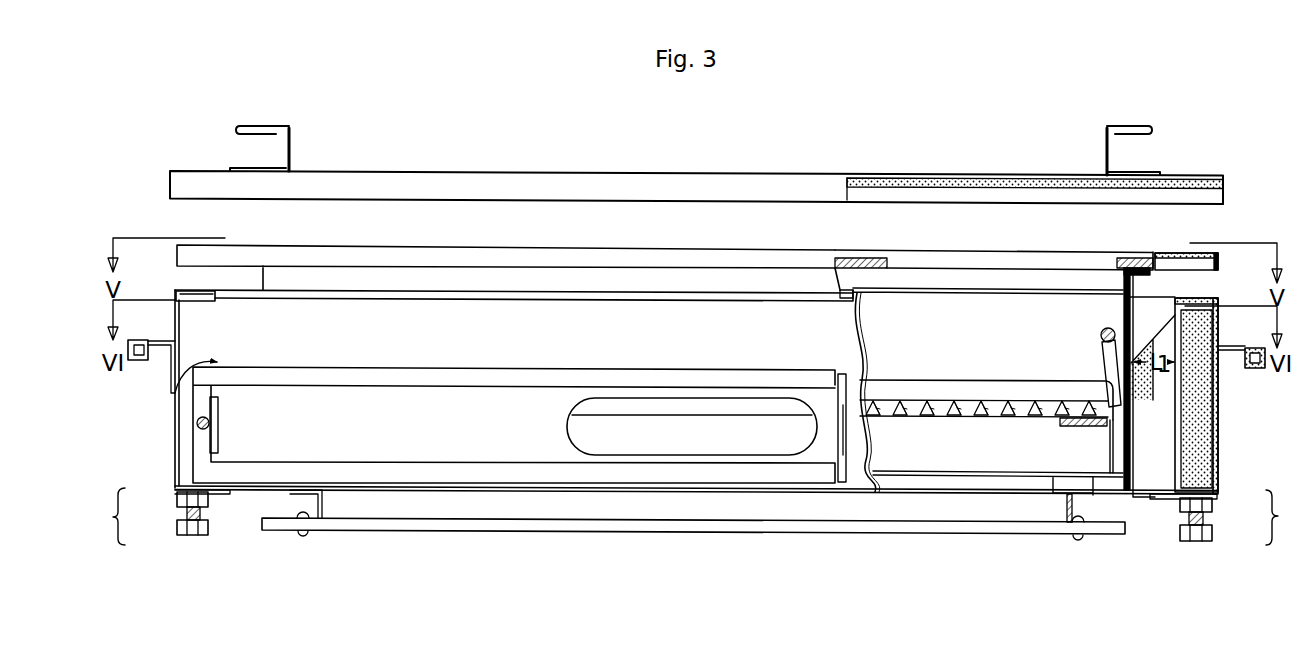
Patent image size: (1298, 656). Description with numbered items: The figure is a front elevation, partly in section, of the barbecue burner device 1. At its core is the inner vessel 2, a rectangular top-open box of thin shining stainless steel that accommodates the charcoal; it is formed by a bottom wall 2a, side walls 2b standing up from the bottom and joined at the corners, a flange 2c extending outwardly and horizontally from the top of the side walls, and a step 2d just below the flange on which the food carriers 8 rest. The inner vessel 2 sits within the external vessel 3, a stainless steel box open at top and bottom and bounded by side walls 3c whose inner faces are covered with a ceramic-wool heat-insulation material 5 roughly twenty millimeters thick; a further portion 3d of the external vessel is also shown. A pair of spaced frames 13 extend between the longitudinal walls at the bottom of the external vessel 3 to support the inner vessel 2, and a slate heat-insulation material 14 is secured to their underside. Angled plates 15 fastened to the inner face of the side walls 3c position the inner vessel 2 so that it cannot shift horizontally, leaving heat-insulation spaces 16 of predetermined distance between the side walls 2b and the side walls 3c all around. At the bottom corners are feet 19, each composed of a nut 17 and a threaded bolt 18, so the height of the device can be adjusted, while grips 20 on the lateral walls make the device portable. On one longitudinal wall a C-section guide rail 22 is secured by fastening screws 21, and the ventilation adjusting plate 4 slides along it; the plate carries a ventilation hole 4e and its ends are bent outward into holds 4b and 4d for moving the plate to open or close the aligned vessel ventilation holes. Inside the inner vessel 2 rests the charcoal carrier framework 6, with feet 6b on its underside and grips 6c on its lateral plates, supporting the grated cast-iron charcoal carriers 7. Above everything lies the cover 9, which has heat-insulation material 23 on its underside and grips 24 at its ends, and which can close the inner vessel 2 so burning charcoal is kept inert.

The barbecue burner device 1 is at (548, 162).
The inner vessel 2 is at (737, 248).
The bottom wall 2a is at (1018, 471).
The side walls 2b is at (1124, 318).
The flange 2c is at (1165, 253).
The step 2d is at (1133, 258).
The external vessel 3 is at (175, 322).
The side walls 3c is at (1218, 460).
The top flange of frame 3d is at (178, 290).
The ventilation adjusting plate 4 is at (833, 374).
The hold 4b is at (843, 376).
The hold 4d is at (210, 447).
The ventilation hole 4e is at (570, 428).
The heat-insulation material 5 is at (1205, 440).
The charcoal carrier framework 6 is at (1030, 380).
The feet 6b is at (1110, 450).
The grips 6c is at (1102, 334).
The charcoal carriers 7 is at (955, 400).
The food carriers 8 is at (975, 252).
The cover 9 is at (955, 177).
The frames 13 is at (1093, 483).
The heat-insulation material 14 is at (353, 531).
The angled plates 15 is at (1160, 330).
The heat-insulation spaces 16 is at (1153, 307).
The nut 17 is at (177, 498).
The bolt 18 is at (177, 528).
The feet 19 is at (693, 516).
The grips 20 is at (1263, 394).
The fastening screws 21 is at (197, 423).
The guide rail 22 is at (175, 394).
The heat-insulation material 23 is at (1213, 203).
The grips 24 is at (260, 126).